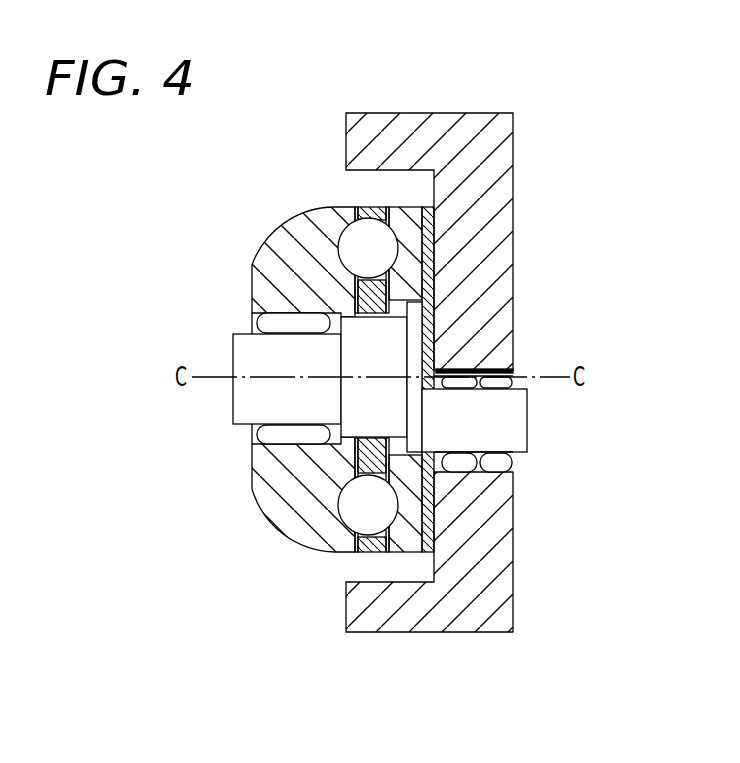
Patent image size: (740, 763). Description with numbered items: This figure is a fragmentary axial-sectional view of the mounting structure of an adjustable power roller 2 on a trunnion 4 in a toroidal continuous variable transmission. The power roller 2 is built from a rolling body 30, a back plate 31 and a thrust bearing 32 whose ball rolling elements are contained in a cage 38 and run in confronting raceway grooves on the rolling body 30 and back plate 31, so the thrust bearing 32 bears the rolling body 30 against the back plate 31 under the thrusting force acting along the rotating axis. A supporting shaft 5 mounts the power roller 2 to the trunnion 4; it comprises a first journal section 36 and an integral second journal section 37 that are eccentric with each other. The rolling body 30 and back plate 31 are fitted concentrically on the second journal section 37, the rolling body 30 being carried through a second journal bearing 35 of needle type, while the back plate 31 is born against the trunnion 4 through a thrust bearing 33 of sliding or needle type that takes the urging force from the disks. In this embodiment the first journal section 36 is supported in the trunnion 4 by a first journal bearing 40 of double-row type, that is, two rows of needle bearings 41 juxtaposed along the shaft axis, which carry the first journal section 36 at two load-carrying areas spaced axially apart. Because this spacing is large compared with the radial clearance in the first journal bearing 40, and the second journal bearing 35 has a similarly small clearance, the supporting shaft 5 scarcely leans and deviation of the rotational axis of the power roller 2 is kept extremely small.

The power roller 2 is at (270, 245).
The trunnion 4 is at (483, 300).
The supporting shaft 5 is at (532, 454).
The rolling body 30 is at (297, 497).
The back plate 31 is at (403, 215).
The thrust bearing 32 is at (346, 239).
The thrust bearing 33 is at (427, 265).
The second journal bearing 35 is at (258, 322).
The first journal section 36 is at (512, 429).
The second journal section 37 is at (260, 395).
The cage 38 is at (365, 207).
The first journal bearing 40 is at (507, 367).
The needle bearings 41 is at (508, 467).